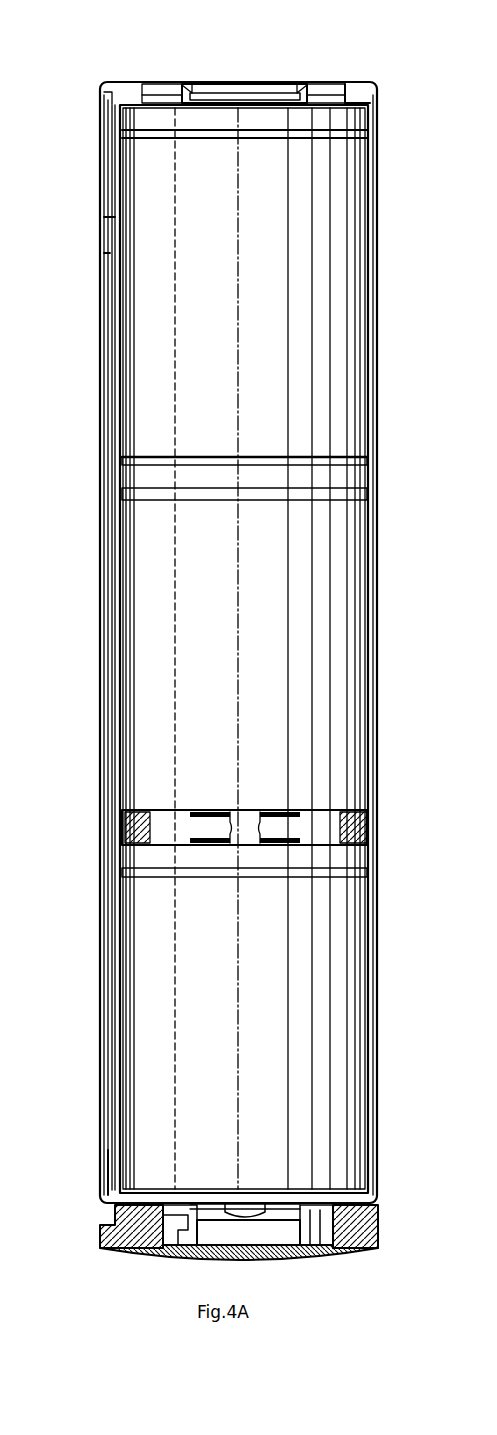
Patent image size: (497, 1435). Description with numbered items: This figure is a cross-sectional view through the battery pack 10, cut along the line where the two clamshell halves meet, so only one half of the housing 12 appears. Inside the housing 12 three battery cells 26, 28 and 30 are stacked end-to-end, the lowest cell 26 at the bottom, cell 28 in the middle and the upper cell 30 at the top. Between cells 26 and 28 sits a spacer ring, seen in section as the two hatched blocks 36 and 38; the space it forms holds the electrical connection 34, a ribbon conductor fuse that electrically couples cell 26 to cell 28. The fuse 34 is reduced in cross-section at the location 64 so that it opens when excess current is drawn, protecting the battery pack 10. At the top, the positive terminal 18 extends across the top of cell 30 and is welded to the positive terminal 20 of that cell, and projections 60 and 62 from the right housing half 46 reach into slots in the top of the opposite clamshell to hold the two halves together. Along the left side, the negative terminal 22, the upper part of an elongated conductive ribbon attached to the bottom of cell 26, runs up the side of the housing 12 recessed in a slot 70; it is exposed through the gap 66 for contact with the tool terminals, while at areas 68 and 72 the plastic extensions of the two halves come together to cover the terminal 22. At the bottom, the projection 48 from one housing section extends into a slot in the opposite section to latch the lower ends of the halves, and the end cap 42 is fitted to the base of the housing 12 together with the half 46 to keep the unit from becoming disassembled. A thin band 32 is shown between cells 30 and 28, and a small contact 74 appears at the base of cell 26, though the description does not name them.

The battery pack 10 is at (80, 542).
The housing 12 is at (78, 447).
The positive terminal 18 is at (245, 90).
The positive terminal of cell 30 20 is at (252, 135).
The negative terminal 22 is at (110, 145).
The battery cell 26 is at (277, 995).
The battery cell 28 is at (277, 573).
The battery cell 30 is at (270, 320).
The cell separator 32 is at (270, 460).
The electrical connection 34 is at (247, 820).
The spacer ring 36 is at (123, 838).
The spacer ring 38 is at (367, 825).
The end cap 42 is at (127, 1255).
The right half of housing 46 is at (310, 1260).
The projection 48 is at (108, 335).
The projection 60 is at (325, 90).
The projection 62 is at (160, 90).
The reduced cross-section 64 is at (218, 826).
The gap 66 is at (105, 107).
The covered area 68 is at (100, 244).
The slot 70 is at (112, 288).
The covered area 72 is at (108, 1168).
The contact 74 is at (255, 1198).